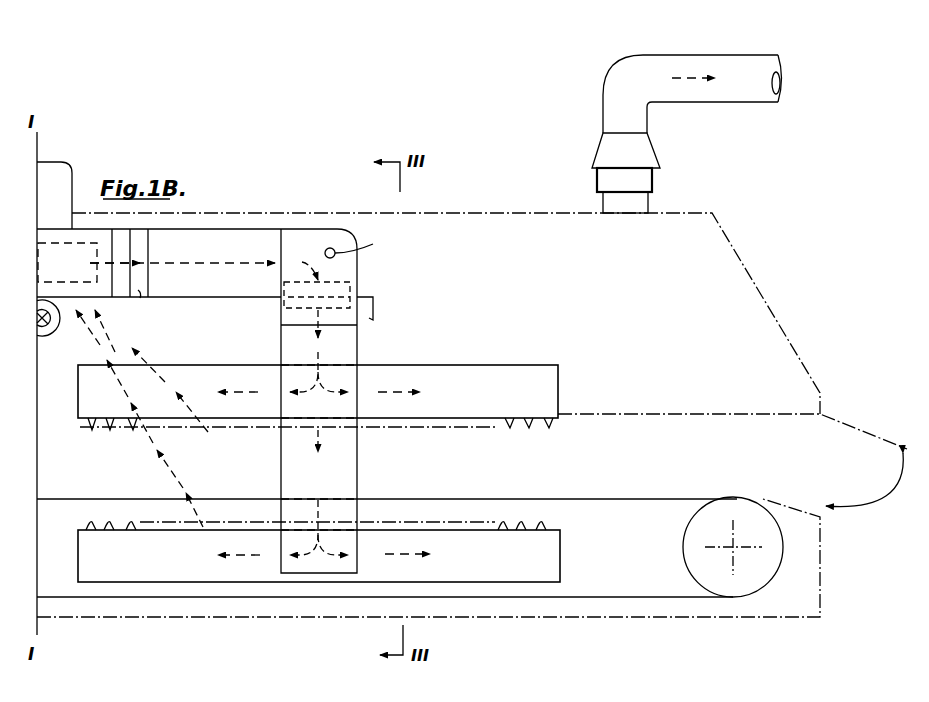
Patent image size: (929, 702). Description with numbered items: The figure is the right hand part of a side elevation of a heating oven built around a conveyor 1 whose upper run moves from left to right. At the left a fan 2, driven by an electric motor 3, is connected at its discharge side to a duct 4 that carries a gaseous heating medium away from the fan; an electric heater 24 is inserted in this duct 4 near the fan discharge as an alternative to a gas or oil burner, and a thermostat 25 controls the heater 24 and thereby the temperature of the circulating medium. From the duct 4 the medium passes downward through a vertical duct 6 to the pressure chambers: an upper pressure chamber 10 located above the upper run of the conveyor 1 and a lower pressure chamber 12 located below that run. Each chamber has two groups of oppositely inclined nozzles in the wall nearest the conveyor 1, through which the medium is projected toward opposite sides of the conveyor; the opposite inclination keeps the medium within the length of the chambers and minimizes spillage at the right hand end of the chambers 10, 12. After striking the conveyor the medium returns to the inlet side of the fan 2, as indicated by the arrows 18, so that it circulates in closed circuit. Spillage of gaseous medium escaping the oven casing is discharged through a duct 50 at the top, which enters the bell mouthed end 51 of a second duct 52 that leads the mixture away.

The conveyor 1 is at (577, 497).
The fan 2 is at (60, 248).
The electric motor 3 is at (60, 170).
The duct 4 is at (228, 245).
The duct 6 is at (352, 358).
The upper pressure chamber 10 is at (198, 383).
The lower pressure chamber 12 is at (164, 576).
The arrow 18 is at (142, 418).
The electric heater 24 is at (142, 256).
The thermostat 25 is at (325, 250).
The duct 50 is at (648, 205).
The bell mouthed end 51 is at (607, 149).
The second duct 52 is at (620, 78).